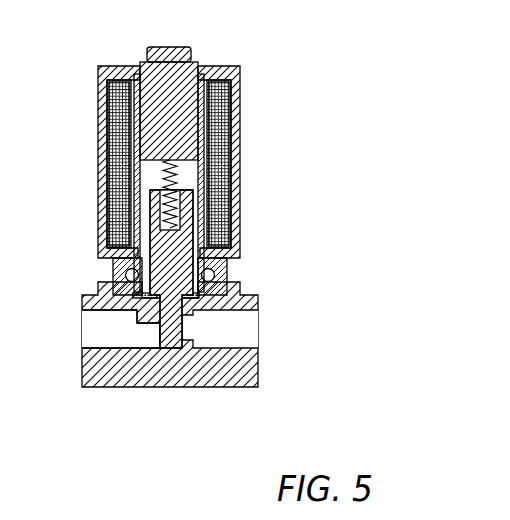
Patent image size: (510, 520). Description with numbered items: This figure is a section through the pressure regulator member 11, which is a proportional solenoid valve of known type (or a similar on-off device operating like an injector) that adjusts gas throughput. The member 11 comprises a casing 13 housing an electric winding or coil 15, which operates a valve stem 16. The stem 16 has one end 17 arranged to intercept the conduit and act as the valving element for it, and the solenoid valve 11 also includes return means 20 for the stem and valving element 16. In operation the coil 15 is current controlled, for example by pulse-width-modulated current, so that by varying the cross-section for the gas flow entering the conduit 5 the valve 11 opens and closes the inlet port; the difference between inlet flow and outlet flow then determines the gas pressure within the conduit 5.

The conduit 5 is at (154, 311).
The pressure regulator member 11 is at (195, 162).
The casing 13 is at (236, 214).
The electric winding or coil 15 is at (123, 200).
The valve stem 16 is at (133, 288).
The end of valve stem 17 is at (160, 327).
The return means 20 is at (180, 176).